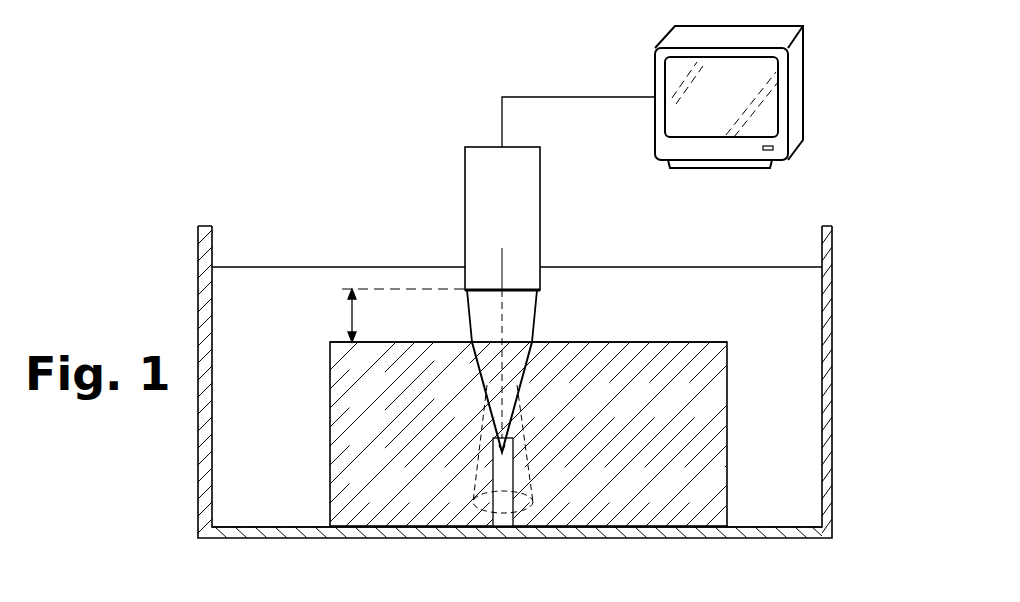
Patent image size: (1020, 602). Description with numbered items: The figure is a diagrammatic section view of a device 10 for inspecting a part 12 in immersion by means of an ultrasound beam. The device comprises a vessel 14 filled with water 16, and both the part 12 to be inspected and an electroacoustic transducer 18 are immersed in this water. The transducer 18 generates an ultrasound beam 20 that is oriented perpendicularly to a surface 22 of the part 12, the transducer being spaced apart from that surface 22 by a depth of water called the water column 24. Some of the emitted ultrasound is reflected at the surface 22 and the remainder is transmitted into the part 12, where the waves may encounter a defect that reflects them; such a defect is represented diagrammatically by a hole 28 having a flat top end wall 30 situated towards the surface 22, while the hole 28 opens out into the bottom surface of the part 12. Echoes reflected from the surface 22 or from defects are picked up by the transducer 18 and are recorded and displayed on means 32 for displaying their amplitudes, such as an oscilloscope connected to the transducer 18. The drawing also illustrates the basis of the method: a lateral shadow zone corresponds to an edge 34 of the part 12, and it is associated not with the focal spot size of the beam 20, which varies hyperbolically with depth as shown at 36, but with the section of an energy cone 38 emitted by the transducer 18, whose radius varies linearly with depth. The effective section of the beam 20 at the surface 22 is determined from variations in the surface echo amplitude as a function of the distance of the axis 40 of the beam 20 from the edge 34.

The device 10 is at (237, 180).
The part 12 is at (730, 493).
The vessel 14 is at (833, 330).
The water 16 is at (790, 283).
The electroacoustic transducer 18 is at (465, 220).
The ultrasound beam 20 is at (540, 327).
The surface 22 is at (633, 342).
The water column 24 is at (352, 316).
The hole 28 is at (515, 468).
The flat top end wall 30 is at (506, 440).
The means for displaying amplitudes 32 is at (798, 72).
The edge 34 is at (330, 342).
The focal spot size variation 36 is at (480, 473).
The energy cone 38 is at (496, 414).
The axis 40 is at (502, 318).